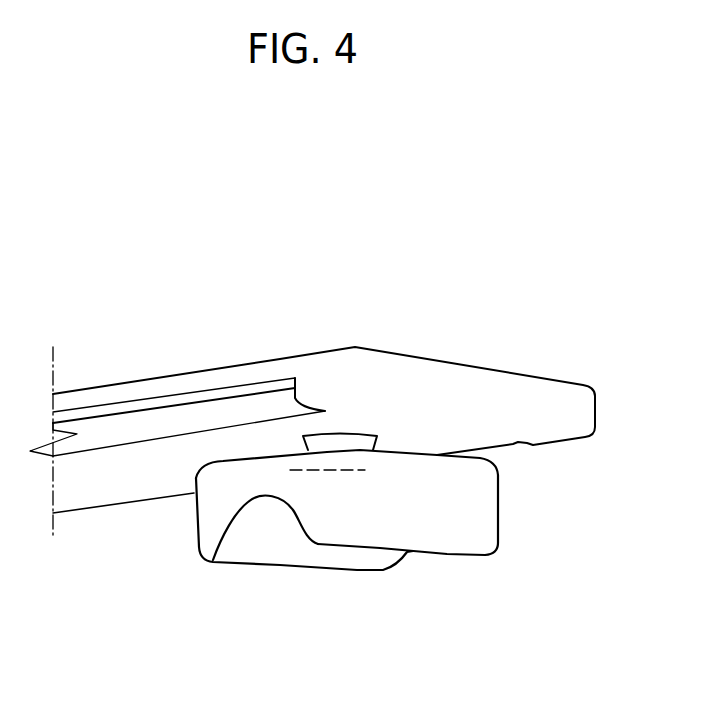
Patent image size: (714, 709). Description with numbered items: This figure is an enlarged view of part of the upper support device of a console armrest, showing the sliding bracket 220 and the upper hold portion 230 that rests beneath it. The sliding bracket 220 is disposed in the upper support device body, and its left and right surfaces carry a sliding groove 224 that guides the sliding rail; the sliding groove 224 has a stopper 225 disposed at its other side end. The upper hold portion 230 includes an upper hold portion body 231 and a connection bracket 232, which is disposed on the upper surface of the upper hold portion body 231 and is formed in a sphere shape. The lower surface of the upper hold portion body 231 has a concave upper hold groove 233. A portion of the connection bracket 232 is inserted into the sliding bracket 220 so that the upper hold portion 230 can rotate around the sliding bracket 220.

The sliding bracket 220 is at (312, 424).
The sliding groove 224 is at (135, 428).
The stopper 225 is at (323, 378).
The upper hold portion 230 is at (402, 491).
The upper hold portion body 231 is at (475, 503).
The connection bracket 232 is at (365, 445).
The upper hold groove 233 is at (262, 528).